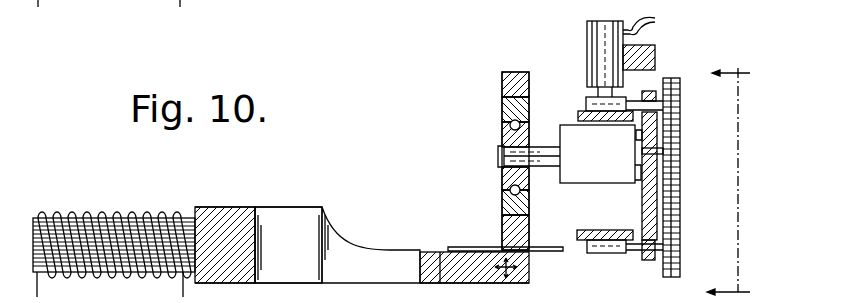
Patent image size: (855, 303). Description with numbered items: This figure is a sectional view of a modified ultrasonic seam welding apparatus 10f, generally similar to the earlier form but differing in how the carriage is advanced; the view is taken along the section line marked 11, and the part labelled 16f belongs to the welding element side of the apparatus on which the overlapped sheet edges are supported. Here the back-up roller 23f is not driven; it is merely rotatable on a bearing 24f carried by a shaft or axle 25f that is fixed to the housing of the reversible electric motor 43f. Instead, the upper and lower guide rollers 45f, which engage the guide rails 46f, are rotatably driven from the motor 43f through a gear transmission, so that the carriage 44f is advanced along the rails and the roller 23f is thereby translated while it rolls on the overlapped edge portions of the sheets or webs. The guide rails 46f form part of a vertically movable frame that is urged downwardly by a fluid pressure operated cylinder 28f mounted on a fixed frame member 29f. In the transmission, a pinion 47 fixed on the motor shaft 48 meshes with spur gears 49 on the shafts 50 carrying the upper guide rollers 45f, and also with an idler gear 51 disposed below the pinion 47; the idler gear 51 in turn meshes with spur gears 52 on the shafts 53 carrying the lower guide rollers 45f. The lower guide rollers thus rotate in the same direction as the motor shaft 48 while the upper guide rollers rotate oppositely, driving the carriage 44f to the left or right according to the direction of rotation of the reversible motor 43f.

The ultrasonic seam welding apparatus 10f is at (370, 163).
The block 16f is at (303, 202).
The back-up roller 23f is at (516, 72).
The bearing 24f is at (502, 111).
The shaft or axle 25f is at (502, 187).
The fluid pressure operated cylinder 28f is at (603, 21).
The fixed frame member 29f is at (651, 45).
The reversible electric motor 43f is at (591, 180).
The carriage 44f is at (657, 118).
The guide rollers 45f is at (586, 100).
The guide rails 46f is at (588, 230).
The pinion 47 is at (668, 150).
The motor shaft 48 is at (666, 168).
The spur gears 49 is at (683, 92).
The shafts 50 is at (665, 78).
The idler gear 51 is at (667, 208).
The spur gears 52 is at (670, 248).
The shafts 53 is at (630, 252).
The section line 11 is at (723, 175).